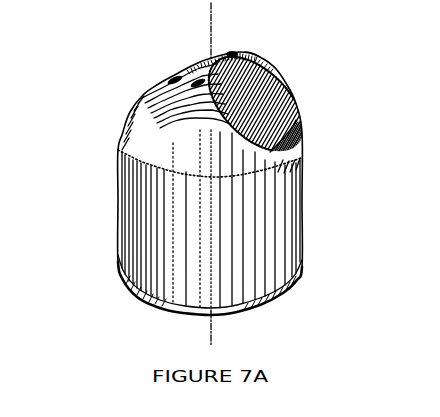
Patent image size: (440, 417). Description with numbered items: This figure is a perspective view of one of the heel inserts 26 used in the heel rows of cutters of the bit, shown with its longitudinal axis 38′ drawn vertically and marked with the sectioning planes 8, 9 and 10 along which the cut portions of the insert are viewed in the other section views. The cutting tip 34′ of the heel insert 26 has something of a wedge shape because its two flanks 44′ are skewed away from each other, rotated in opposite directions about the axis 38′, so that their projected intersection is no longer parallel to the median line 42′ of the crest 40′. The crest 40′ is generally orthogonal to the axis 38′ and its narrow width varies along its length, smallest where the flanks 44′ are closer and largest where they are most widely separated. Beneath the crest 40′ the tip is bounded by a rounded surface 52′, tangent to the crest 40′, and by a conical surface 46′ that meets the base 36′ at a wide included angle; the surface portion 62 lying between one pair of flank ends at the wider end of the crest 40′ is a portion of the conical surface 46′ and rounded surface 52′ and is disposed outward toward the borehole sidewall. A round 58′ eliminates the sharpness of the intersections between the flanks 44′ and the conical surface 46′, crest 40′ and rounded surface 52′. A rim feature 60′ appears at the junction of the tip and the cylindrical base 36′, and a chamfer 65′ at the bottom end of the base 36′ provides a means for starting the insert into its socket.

The heel insert 26 is at (108, 34).
The longitudinal axis 38′ is at (210, 18).
The flanks 44′ is at (178, 72).
The crest 40′ is at (226, 52).
The median line 42′ is at (250, 43).
The sectioning plane 10– 10 is at (258, 68).
The round 58′ is at (283, 133).
The sectioning plane 8– 8 is at (303, 178).
The surface portion 62 is at (167, 83).
The rounded surface 52′ is at (148, 93).
The cutting tip 34′ is at (140, 102).
The conical surface 46′ is at (125, 123).
The rim bead 60′ is at (130, 160).
The sectioning plane 9– 9 is at (118, 203).
The base 36′ is at (117, 222).
The chamfer 65′ is at (165, 304).